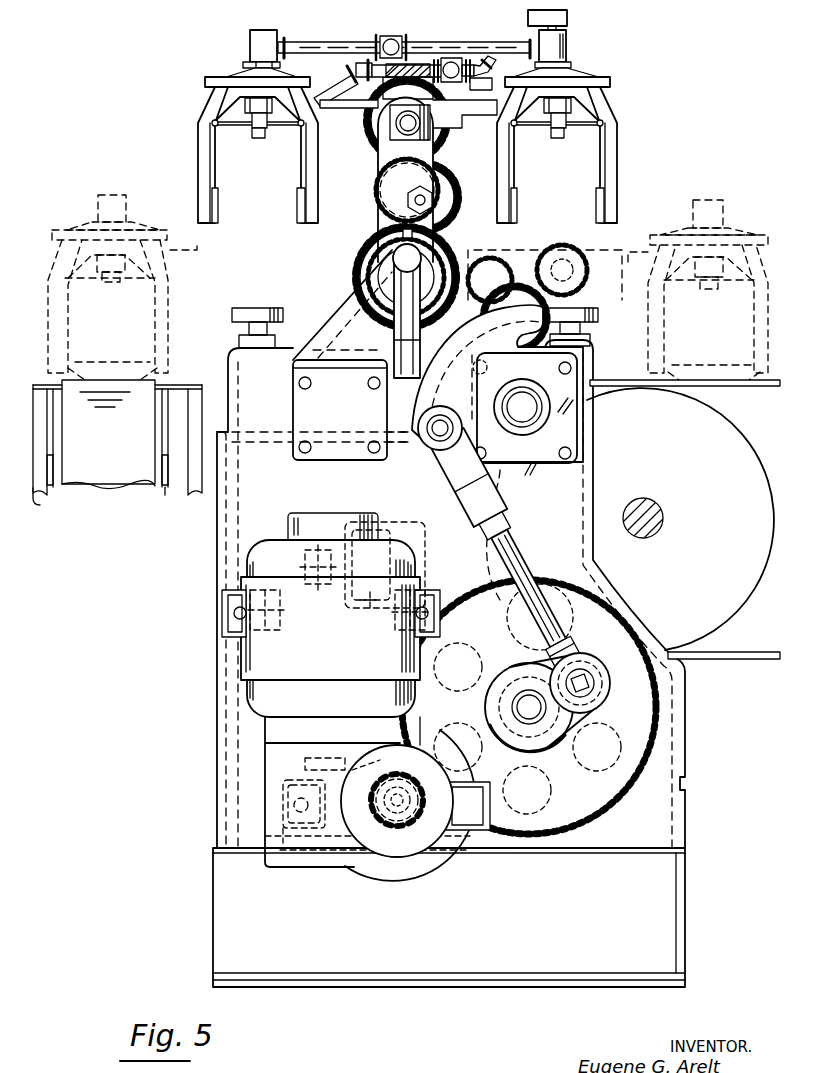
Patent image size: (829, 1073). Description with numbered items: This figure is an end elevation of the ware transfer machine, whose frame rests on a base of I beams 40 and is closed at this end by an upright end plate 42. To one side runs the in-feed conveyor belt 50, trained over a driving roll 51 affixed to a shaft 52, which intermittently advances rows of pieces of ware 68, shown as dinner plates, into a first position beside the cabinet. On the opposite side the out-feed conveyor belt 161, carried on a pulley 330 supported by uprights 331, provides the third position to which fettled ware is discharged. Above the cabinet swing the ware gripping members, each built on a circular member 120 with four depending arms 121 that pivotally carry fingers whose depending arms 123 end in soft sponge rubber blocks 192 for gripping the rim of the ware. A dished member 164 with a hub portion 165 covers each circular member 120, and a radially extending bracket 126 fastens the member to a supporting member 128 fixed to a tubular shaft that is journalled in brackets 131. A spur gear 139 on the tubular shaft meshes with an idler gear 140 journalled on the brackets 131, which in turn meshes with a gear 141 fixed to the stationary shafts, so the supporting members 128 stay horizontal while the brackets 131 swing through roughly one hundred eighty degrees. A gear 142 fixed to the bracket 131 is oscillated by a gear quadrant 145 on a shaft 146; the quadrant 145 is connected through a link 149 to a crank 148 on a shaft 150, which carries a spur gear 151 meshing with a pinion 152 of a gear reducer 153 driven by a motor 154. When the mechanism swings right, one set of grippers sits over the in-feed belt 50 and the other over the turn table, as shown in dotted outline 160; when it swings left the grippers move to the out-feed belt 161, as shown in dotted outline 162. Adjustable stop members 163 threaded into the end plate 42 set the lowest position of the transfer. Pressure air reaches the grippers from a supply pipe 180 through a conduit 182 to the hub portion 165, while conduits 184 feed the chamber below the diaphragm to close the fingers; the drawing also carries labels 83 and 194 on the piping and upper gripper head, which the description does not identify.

The I beams 40 is at (449, 663).
The end plate 42 is at (357, 363).
The in-feed conveyor belt 50 is at (768, 386).
The driving roll 51 is at (680, 519).
The shaft 52 is at (660, 505).
The pieces of ware 68 is at (105, 361).
The pipe coupling 83 is at (452, 84).
The circular member 120 is at (574, 97).
The depending arms 121 is at (603, 124).
The depending arm of gripping finger 123 is at (605, 195).
The radially extending bracket 126 is at (492, 82).
The supporting members 128 is at (456, 112).
The brackets 131 is at (378, 176).
The spur gear 139 is at (374, 142).
The idler gear 140 is at (455, 200).
The gear 141 is at (356, 283).
The gear 142 is at (353, 262).
The gear quadrant 145 is at (478, 373).
The shaft 146 is at (520, 405).
The crank 148 is at (565, 673).
The link 149 is at (493, 538).
The shaft 150 is at (522, 707).
The spur gear 151 is at (476, 584).
The pinion 152 is at (356, 770).
The gear reducer 153 is at (367, 792).
The motor 154 is at (331, 615).
The dotted outline of grippers aligned with turn table 160 is at (762, 308).
The out-feed conveyor belt 161 is at (117, 437).
The dotted outline of grippers at out-feed conveyor 162 is at (165, 322).
The adjustable stop members 163 is at (255, 312).
The dished member 164 is at (592, 78).
The hub portion 165 is at (258, 48).
The supply pipe 180 is at (405, 41).
The conduit 182 is at (315, 42).
The conduits 184 is at (318, 82).
The blocks 192 is at (300, 210).
The cap 194 is at (568, 20).
The pulley 330 is at (165, 495).
The uprights 331 is at (40, 505).